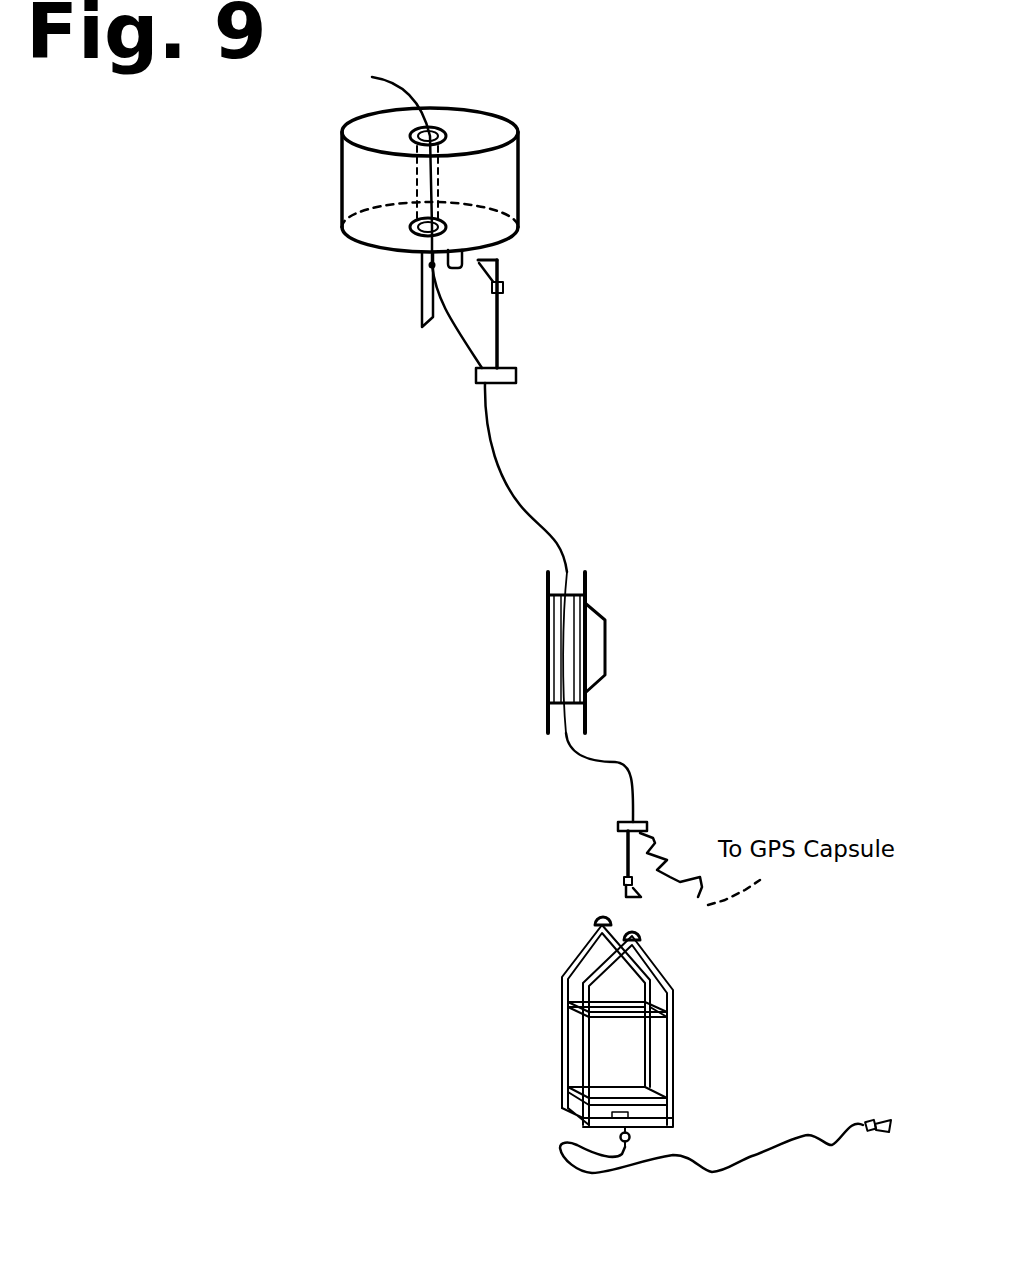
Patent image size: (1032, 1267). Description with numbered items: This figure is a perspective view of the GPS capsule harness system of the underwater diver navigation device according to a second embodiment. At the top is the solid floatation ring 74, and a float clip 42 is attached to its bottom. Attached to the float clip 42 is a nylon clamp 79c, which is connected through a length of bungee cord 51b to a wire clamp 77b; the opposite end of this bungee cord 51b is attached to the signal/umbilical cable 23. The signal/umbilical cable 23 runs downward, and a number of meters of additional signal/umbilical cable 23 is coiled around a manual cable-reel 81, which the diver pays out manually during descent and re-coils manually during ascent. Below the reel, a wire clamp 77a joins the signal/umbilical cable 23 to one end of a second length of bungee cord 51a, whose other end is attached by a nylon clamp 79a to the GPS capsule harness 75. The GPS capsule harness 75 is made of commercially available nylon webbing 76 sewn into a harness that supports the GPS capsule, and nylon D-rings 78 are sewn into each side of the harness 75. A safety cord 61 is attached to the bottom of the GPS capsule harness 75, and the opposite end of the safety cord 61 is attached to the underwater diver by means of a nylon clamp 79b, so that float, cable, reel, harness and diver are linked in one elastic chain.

The solid floatation ring 74 is at (342, 208).
The float clip 42 is at (467, 253).
The nylon clamp 79c is at (505, 287).
The bungee cord 51b is at (500, 325).
The wire clamp 77b is at (516, 380).
The signal/umbilical cable 23 is at (510, 493).
The manual cable-reel 81 is at (610, 630).
The wire clamp 77a is at (617, 827).
The bungee cord 51a is at (625, 857).
The nylon clamp 79a is at (627, 897).
The nylon D-ring 78 is at (641, 937).
The GPS capsule harness 75 is at (562, 983).
The nylon webbing 76 is at (560, 1098).
The safety cord 61 is at (760, 1152).
The nylon clamp 79b is at (872, 1120).